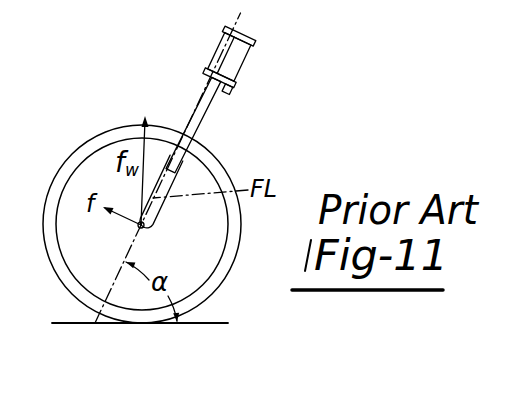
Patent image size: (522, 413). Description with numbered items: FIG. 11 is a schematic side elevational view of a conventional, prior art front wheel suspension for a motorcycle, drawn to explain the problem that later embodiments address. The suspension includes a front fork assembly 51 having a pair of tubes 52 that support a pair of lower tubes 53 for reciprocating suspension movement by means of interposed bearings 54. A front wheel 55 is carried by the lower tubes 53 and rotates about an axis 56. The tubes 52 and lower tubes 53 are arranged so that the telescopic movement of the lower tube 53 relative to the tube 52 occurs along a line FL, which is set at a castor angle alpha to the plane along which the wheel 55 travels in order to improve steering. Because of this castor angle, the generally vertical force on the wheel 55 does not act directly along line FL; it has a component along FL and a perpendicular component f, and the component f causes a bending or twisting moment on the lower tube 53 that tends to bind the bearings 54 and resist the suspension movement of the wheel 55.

The front fork assembly 51 is at (250, 31).
The tubes 52 is at (207, 104).
The lower tubes 53 is at (178, 172).
The bearings 54 is at (187, 117).
The front wheel 55 is at (233, 246).
The axis 56 is at (139, 227).